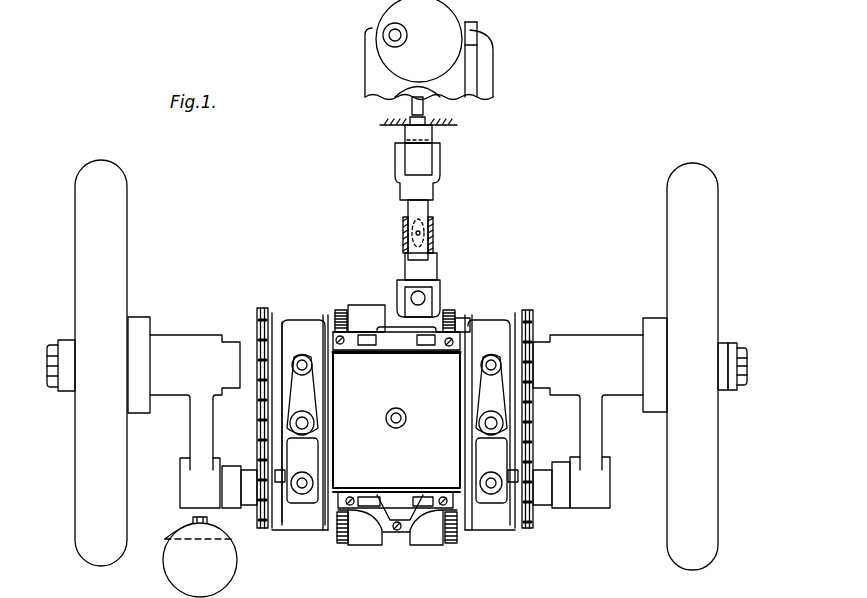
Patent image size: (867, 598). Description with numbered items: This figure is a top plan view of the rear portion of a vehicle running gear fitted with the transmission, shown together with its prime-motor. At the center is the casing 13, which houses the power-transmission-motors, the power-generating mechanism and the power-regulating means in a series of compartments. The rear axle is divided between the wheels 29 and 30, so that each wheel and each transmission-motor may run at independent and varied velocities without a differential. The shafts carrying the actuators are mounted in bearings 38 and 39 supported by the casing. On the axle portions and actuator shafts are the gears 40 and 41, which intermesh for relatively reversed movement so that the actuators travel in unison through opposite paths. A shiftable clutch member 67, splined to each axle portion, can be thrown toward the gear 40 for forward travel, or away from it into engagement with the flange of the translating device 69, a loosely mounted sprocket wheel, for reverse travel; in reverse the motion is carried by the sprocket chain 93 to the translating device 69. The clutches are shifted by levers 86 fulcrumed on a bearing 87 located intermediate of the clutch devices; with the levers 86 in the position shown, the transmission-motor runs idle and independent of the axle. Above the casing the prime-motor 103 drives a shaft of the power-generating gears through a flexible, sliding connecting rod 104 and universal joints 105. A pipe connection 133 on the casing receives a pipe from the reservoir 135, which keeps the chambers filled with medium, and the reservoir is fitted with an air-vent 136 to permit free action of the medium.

The casing 13 is at (396, 422).
The wheel 29 is at (708, 218).
The wheel 30 is at (113, 203).
The bearing 38 is at (588, 510).
The bearing 39 is at (191, 490).
The gear 40 is at (342, 310).
The gear 41 is at (340, 545).
The shiftable clutch member 67 is at (288, 318).
The translating device 69 is at (262, 308).
The lever 86 is at (300, 360).
The bearing 87 is at (290, 425).
The sprocket chain 93 is at (262, 405).
The prime-motor 103 is at (450, 56).
The connecting rod 104 is at (432, 217).
The universal joint 105 is at (440, 170).
The pipe connection 133 is at (402, 425).
The reservoir 135 is at (236, 570).
The air-vent 136 is at (168, 535).